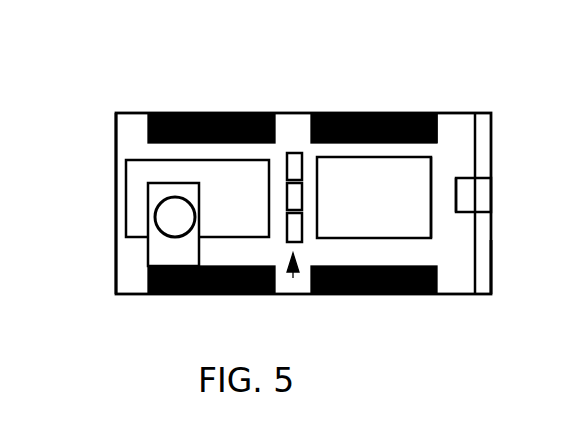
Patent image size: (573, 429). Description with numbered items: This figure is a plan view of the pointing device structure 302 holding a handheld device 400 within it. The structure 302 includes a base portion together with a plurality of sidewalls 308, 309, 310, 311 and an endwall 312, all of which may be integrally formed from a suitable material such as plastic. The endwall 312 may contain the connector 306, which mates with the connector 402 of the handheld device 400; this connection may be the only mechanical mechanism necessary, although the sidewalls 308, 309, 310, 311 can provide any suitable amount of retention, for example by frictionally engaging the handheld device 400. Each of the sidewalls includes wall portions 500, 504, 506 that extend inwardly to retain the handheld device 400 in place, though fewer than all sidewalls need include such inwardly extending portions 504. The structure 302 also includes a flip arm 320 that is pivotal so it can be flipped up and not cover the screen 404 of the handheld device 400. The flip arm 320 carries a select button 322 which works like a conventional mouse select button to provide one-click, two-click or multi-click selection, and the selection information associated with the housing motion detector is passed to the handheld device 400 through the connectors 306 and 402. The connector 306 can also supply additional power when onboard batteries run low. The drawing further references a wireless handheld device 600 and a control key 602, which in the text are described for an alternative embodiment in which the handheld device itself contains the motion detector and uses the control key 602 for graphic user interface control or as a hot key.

The handheld device 400 is at (480, 116).
The endwall 312 is at (492, 155).
The structure 302 is at (482, 263).
The connector 306 is at (485, 195).
The connector 402 is at (456, 190).
The sidewall 309 is at (216, 113).
The sidewall 311 is at (360, 113).
The sidewall 308 is at (175, 294).
The sidewall 310 is at (403, 295).
The flip arm 320 is at (147, 252).
The select button 322 is at (160, 203).
The inwardly extending portion 504 is at (284, 135).
The wall portion 506 is at (438, 118).
The wireless handheld device 600 is at (413, 173).
The screen 404 is at (134, 160).
The wall portion 500 is at (283, 294).
The control key 602 is at (295, 278).